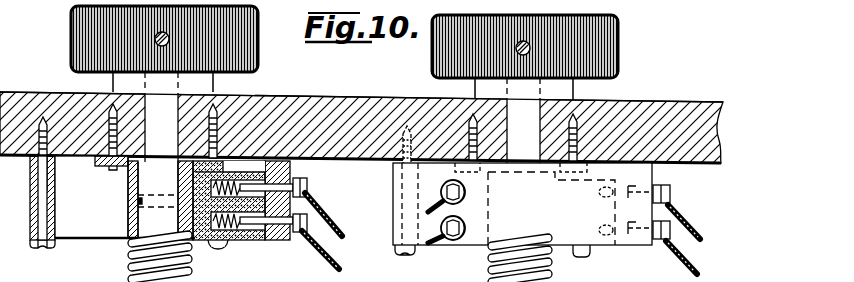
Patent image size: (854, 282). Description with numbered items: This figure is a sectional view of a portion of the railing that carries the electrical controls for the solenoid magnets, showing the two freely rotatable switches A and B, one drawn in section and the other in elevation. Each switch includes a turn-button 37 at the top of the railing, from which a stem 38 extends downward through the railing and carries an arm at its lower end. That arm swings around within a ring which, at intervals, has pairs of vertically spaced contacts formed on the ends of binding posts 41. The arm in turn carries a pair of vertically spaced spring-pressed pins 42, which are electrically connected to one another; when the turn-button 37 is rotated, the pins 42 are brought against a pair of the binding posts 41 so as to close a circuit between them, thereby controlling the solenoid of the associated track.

The turn-button 37 is at (248, 30).
The stem 38 is at (121, 167).
The binding posts 41 is at (310, 203).
The spring-pressed pins 42 is at (248, 230).
The rotary switch A is at (448, 48).
The rotary switch B is at (83, 42).